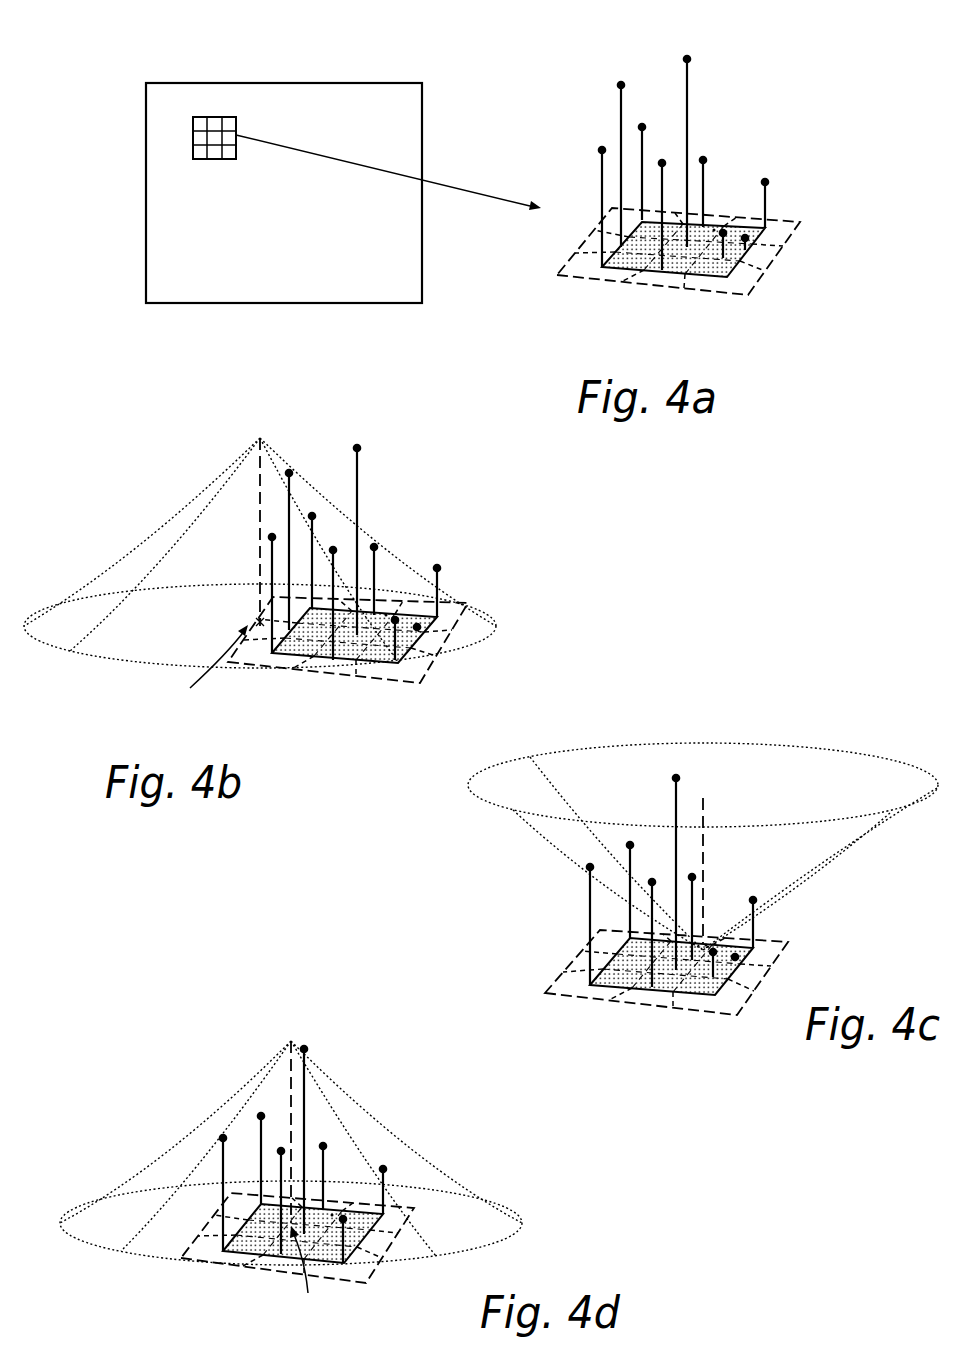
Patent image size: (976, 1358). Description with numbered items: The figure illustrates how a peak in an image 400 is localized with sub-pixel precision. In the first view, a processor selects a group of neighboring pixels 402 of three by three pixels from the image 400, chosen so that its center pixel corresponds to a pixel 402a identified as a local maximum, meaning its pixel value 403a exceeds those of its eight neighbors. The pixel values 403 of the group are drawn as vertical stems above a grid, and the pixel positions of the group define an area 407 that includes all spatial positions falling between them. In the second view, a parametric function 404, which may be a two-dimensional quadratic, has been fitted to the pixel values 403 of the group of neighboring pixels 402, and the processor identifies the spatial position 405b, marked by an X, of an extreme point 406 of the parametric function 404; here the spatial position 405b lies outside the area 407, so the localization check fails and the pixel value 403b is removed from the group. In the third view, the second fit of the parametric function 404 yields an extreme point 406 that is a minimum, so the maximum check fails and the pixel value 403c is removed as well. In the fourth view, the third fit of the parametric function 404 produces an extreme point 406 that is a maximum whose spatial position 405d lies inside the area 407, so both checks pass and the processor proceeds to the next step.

In FIG. 4A, the image 400 is at (307, 83).
In FIG. 4A, the group of neighboring pixels 402 is at (193, 133).
In FIG. 4B, the group of neighboring pixels 402 is at (340, 675).
In FIG. 4C, the group of neighboring pixels 402 is at (667, 1005).
In FIG. 4D, the group of neighboring pixels 402 is at (288, 1265).
In FIG. 4A, the pixel identified as a local maximum 402a is at (683, 253).
In FIG. 4A, the pixel values 403 is at (602, 183).
In FIG. 4B, the pixel values 403 is at (273, 598).
In FIG. 4C, the pixel values 403 is at (590, 933).
In FIG. 4D, the pixel values 403 is at (217, 1205).
In FIG. 4A, the pixel value of the local maximum pixel 403a is at (687, 117).
In FIG. 4B, the pixel value removed after first fit 403b is at (292, 493).
In FIG. 4C, the pixel value removed after second fit 403c is at (740, 965).
In FIG. 4B, the parametric function 404 is at (192, 495).
In FIG. 4C, the parametric function 404 is at (530, 818).
In FIG. 4D, the parametric function 404 is at (192, 1115).
In FIG. 4B, the spatial position of the extreme point (first fit) 405b is at (193, 672).
In FIG. 4D, the spatial position of the extreme point (third fit) 405d is at (296, 1272).
In FIG. 4B, the extreme point 406 is at (263, 437).
In FIG. 4D, the extreme point 406 is at (285, 1033).
In FIG. 4A, the area 407 is at (715, 222).
In FIG. 4B, the area 407 is at (387, 607).
In FIG. 4C, the area 407 is at (706, 937).
In FIG. 4D, the area 407 is at (327, 1201).